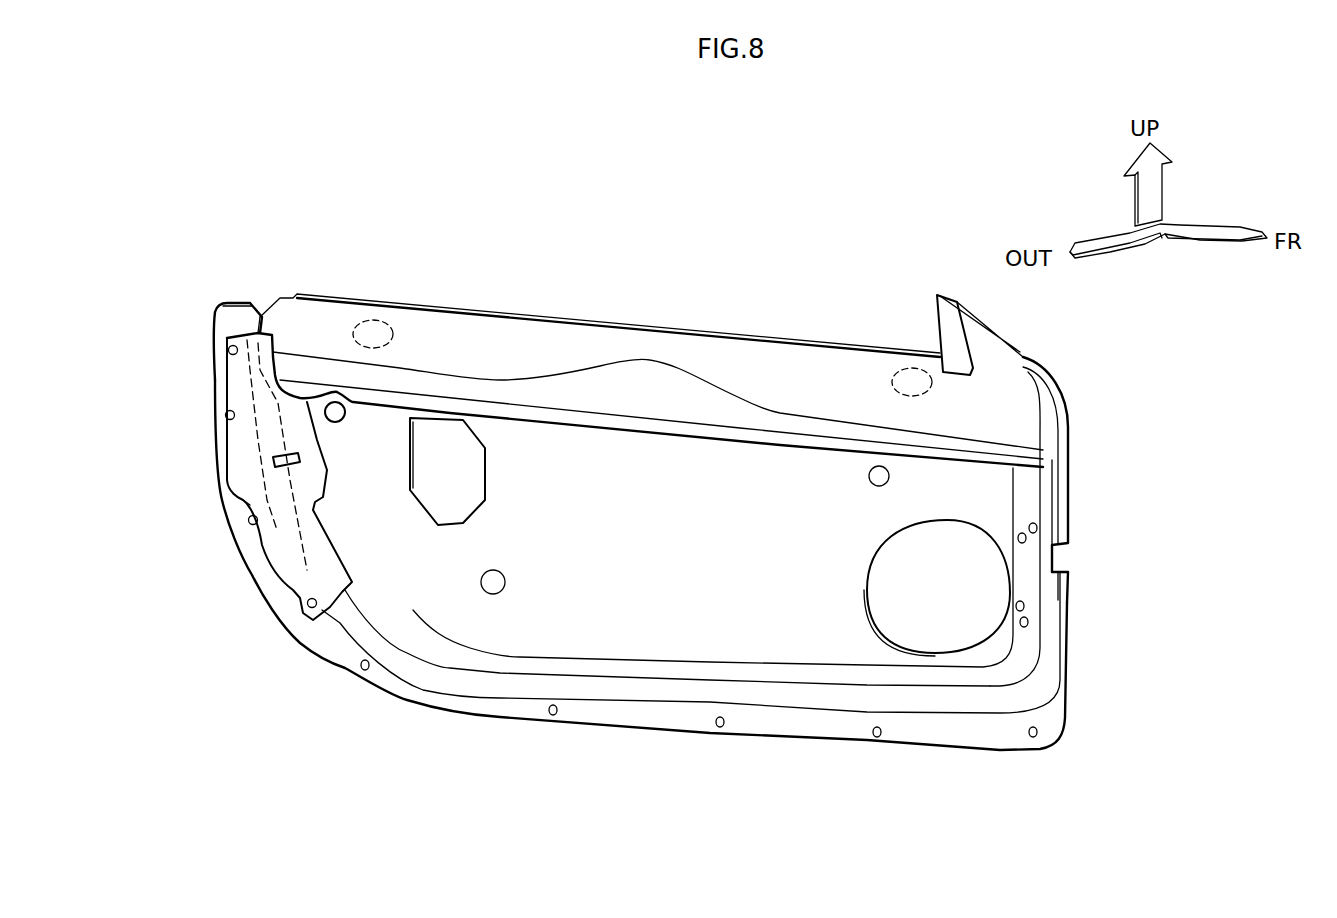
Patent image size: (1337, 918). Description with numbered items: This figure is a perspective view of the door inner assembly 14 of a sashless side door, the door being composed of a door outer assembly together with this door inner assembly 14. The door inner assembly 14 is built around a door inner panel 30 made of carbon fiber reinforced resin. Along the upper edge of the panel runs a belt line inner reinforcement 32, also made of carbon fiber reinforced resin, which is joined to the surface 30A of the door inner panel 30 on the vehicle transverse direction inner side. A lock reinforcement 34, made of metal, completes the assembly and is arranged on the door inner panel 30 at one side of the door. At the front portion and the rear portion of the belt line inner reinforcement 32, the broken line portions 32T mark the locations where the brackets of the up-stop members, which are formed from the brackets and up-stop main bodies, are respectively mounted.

The door inner assembly 14 is at (383, 196).
The door inner panel 30 is at (647, 718).
The surface 30A is at (686, 550).
The belt line inner reinforcement 32 is at (792, 362).
The broken line portions 32T is at (393, 330).
The lock reinforcement 34 is at (298, 535).